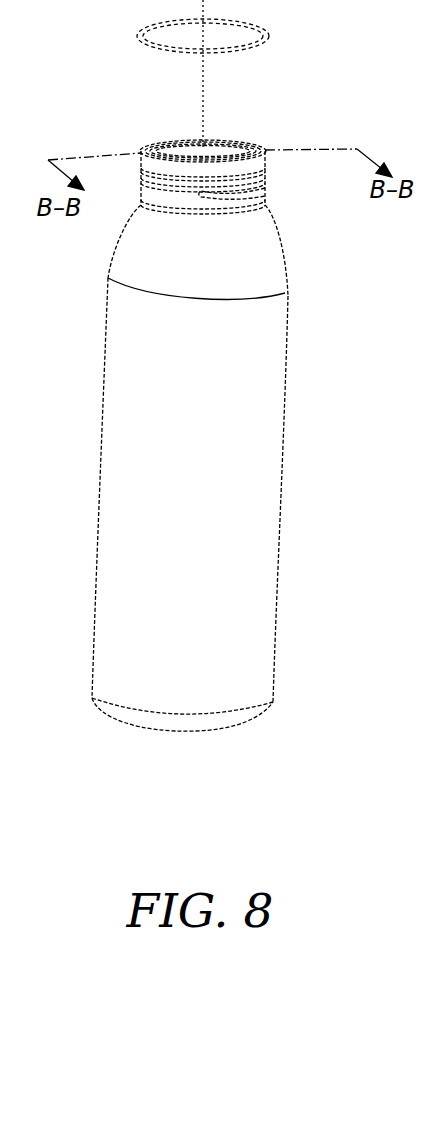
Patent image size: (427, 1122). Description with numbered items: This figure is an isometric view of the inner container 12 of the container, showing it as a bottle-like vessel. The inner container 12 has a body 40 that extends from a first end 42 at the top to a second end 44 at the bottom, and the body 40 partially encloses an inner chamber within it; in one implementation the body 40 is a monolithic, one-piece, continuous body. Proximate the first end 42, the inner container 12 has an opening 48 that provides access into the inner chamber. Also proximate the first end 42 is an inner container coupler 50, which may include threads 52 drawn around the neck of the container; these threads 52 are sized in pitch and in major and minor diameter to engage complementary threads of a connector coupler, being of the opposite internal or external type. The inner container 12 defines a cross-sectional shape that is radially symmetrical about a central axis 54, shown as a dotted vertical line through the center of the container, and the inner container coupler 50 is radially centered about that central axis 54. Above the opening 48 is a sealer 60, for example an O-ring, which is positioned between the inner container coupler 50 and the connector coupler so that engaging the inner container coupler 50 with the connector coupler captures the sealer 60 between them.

The inner container 12 is at (308, 403).
The body 40 is at (283, 230).
The first end 42 is at (236, 143).
The second end 44 is at (243, 727).
The opening 48 is at (163, 151).
The inner container coupler 50 is at (268, 189).
The threads 52 is at (141, 174).
The central axis 54 is at (205, 70).
The sealer 60 is at (137, 36).